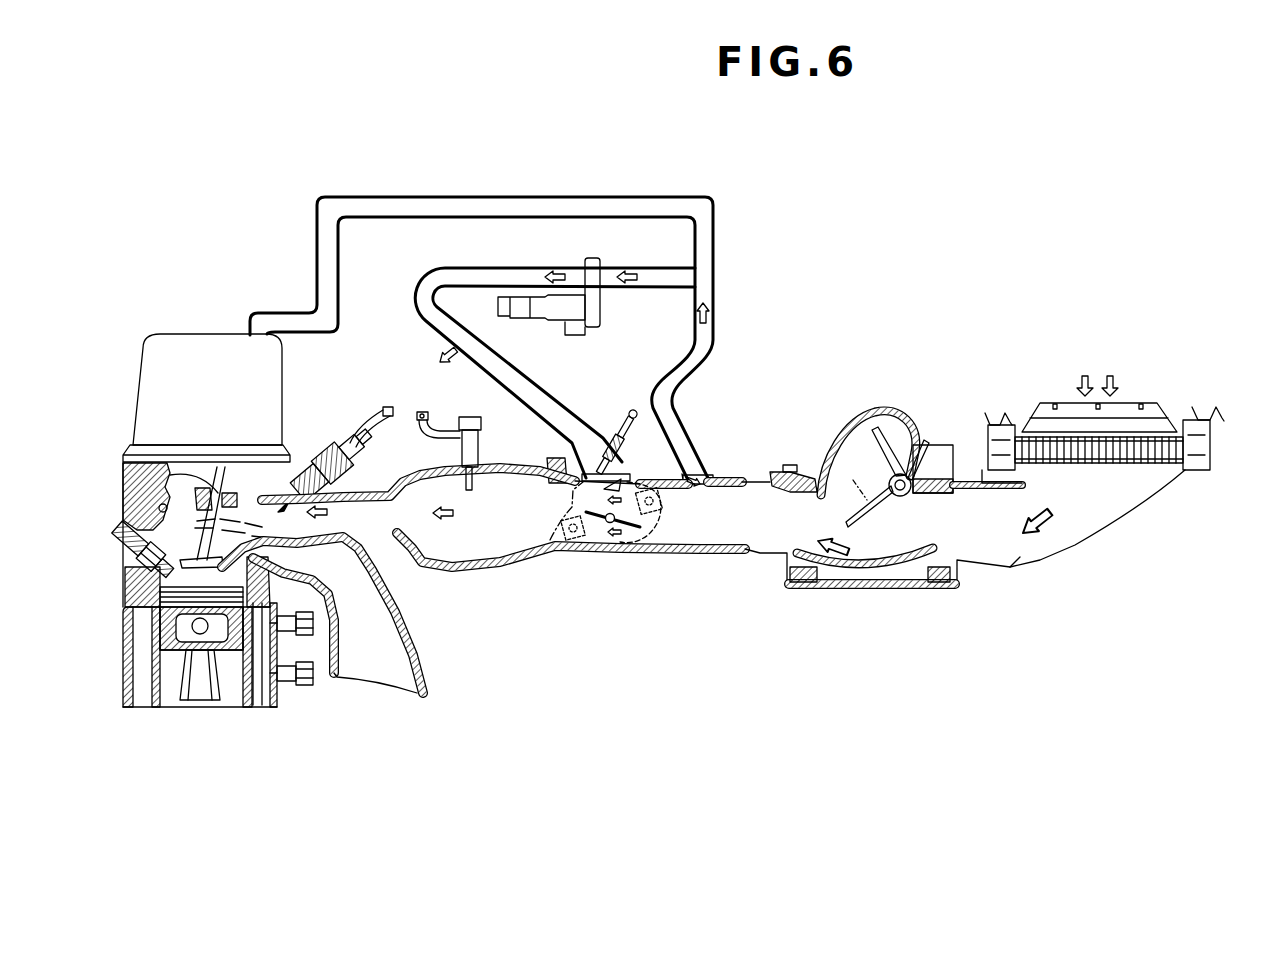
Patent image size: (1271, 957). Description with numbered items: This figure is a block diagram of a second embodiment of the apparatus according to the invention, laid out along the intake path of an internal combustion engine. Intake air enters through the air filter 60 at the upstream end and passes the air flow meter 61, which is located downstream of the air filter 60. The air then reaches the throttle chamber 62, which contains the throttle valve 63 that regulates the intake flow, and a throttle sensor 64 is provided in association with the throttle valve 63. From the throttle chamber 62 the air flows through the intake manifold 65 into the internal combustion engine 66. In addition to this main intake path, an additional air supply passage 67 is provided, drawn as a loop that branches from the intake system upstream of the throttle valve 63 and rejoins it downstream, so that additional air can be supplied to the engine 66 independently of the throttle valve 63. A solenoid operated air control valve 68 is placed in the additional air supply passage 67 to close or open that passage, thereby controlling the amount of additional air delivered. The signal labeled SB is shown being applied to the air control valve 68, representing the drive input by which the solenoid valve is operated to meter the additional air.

The air filter 60 is at (1130, 466).
The air flow meter 61 is at (860, 430).
The throttle chamber 62 is at (655, 550).
The throttle valve 63 is at (600, 523).
The throttle sensor 64 is at (550, 545).
The intake manifold 65 is at (422, 562).
The internal combustion engine 66 is at (302, 722).
The additional air supply passage 67 is at (406, 305).
The solenoid operated air control valve 68 is at (545, 320).
The sensor signal SB is at (484, 307).